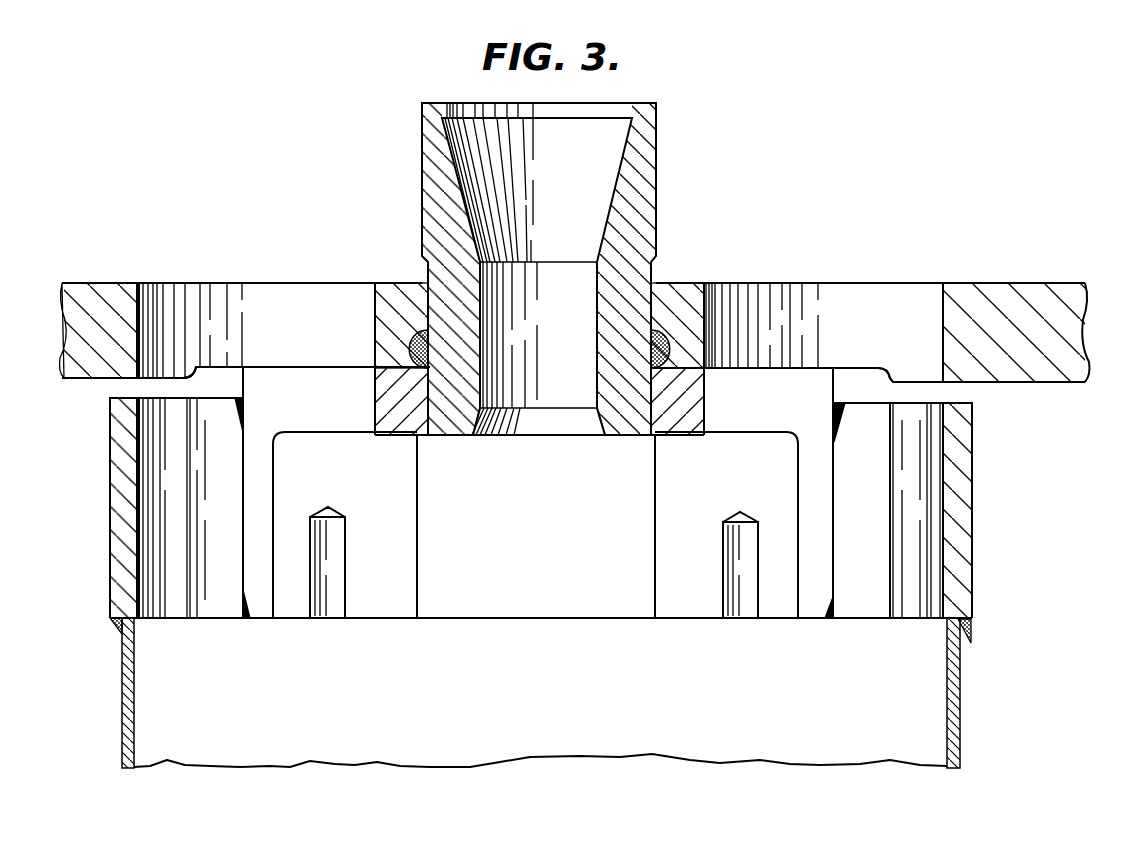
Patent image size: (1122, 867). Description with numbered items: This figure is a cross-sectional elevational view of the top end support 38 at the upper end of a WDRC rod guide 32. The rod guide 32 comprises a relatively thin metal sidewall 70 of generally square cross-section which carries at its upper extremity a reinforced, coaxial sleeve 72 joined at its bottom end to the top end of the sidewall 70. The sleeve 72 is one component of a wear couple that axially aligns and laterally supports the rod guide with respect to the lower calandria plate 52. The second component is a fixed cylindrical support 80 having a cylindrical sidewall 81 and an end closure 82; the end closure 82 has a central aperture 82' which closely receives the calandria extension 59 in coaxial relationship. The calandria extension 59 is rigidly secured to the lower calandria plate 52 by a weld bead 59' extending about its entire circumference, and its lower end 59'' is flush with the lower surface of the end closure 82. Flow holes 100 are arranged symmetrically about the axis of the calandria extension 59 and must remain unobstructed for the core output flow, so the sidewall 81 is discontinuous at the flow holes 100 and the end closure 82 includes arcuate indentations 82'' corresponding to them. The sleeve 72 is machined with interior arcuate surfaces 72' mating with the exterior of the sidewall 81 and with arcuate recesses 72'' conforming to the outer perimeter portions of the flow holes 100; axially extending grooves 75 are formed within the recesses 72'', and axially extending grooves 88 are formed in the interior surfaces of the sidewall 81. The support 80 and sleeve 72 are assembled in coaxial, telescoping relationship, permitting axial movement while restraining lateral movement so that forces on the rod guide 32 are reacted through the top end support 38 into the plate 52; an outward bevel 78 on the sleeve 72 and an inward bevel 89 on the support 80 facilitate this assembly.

The WDRC rod guide 32 is at (1045, 741).
The top end support 38 is at (983, 400).
The lower calandria plate 52 is at (1025, 290).
The calandria extension 59 is at (565, 269).
The weld bead 59' is at (539, 349).
The lower end of calandria extension 59'' is at (552, 451).
The thin metal sidewall 70 is at (962, 709).
The sleeve 72 is at (576, 492).
The interior arcuate surfaces 72' is at (742, 525).
The arcuate recesses 72'' is at (928, 633).
The axially extending grooves 75 is at (172, 608).
The outward bevel 78 is at (243, 402).
The fixed cylindrical support 80 is at (838, 390).
The cylindrical sidewall 81 is at (265, 491).
The end closure 82 is at (345, 518).
The central aperture 82' is at (536, 512).
The arcuate indentations 82'' is at (523, 431).
The axially extending grooves 88 is at (337, 610).
The inward bevel 89 is at (250, 620).
The flow holes 100 is at (325, 341).